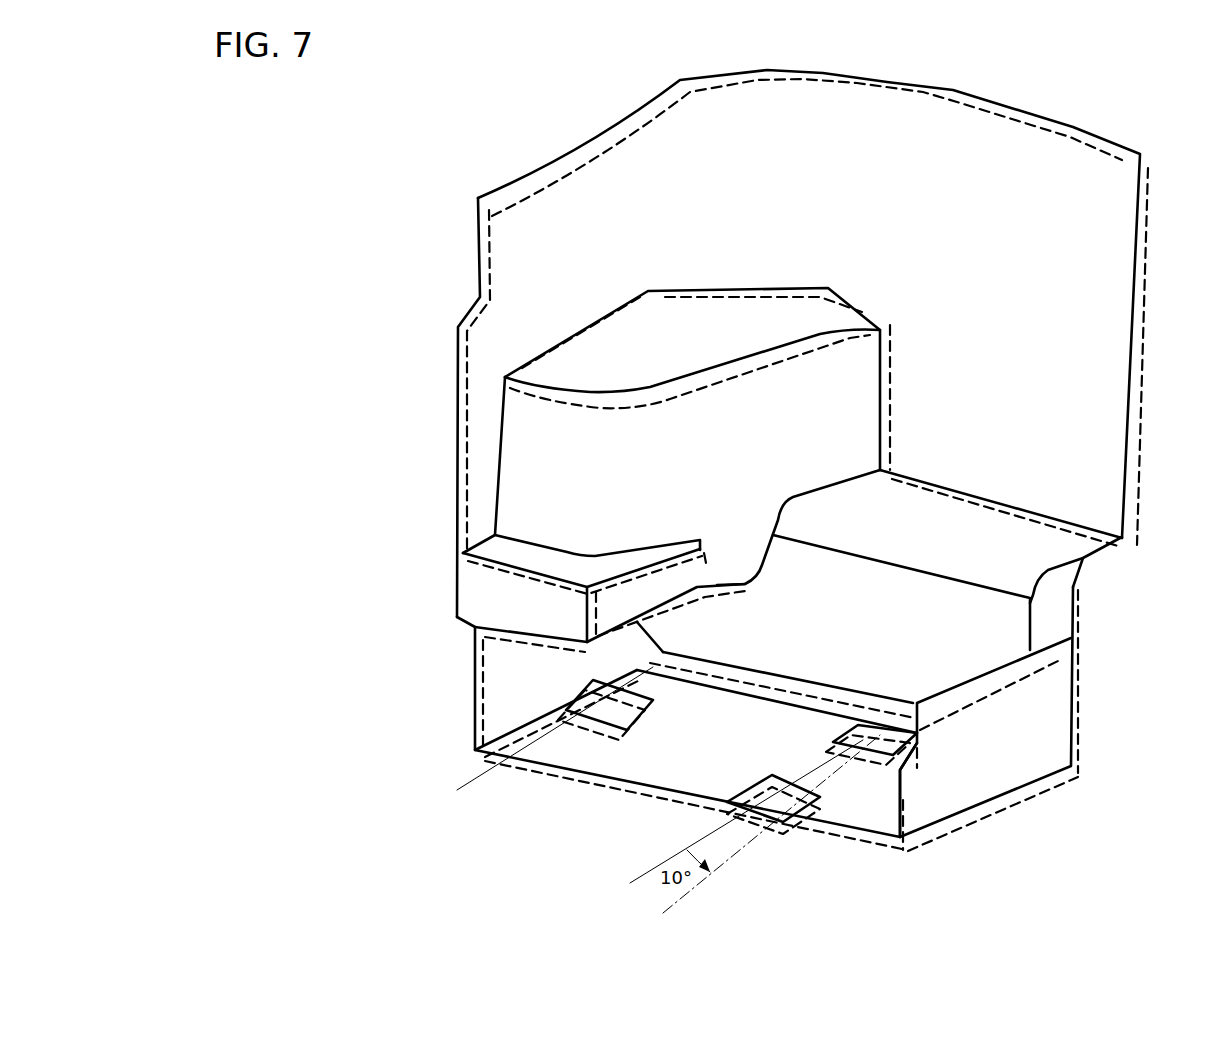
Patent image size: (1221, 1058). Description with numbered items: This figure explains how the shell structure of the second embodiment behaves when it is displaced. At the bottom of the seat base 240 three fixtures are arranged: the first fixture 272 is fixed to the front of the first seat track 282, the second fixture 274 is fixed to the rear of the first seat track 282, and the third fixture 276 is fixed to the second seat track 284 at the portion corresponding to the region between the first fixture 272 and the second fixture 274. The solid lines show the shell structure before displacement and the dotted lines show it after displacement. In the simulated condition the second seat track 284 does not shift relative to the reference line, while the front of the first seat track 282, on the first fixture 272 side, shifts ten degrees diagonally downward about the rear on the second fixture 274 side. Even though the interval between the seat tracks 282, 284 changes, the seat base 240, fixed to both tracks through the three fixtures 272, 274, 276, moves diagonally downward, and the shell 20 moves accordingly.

The shell 20 is at (1145, 138).
The seat base 240 is at (1033, 720).
The first fixture 272 is at (807, 777).
The second fixture 274 is at (920, 737).
The third fixture 276 is at (585, 690).
The first seat track 282 is at (653, 877).
The second seat track 284 is at (463, 783).